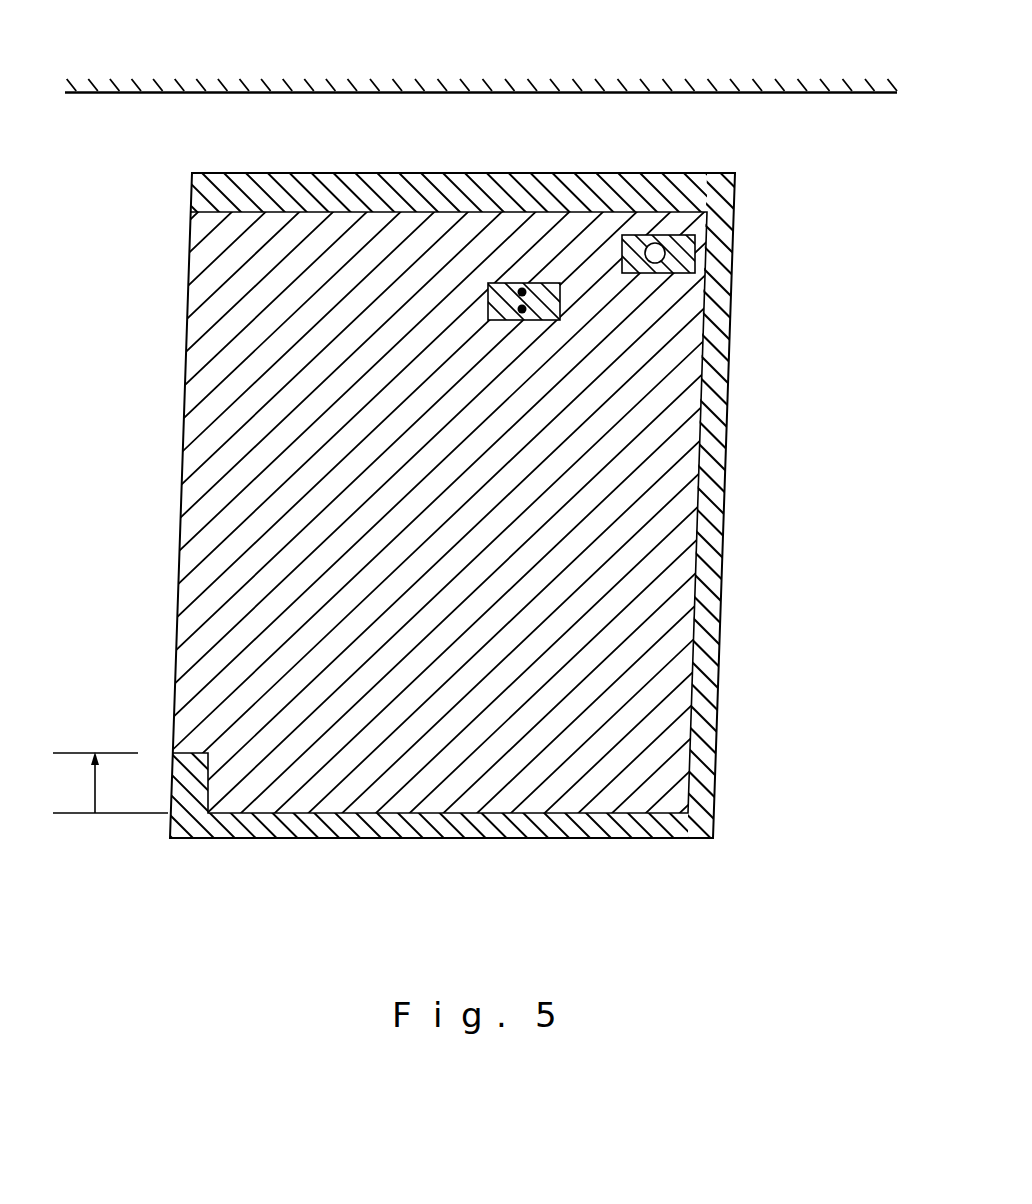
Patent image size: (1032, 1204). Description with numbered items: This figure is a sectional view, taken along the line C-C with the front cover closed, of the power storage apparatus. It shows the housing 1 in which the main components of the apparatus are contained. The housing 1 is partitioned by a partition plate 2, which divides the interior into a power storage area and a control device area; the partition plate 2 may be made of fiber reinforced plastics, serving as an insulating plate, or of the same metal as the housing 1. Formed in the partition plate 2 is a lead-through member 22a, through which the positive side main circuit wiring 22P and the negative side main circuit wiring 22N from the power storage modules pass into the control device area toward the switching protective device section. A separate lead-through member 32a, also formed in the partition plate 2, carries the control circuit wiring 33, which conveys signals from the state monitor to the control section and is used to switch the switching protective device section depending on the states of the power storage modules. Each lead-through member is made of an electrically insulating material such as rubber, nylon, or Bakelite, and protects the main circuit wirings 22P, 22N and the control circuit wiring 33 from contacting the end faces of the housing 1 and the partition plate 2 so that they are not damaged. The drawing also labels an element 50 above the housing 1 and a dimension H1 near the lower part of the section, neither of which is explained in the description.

The ground / mounting surface 50 is at (626, 84).
The housing 1 is at (497, 174).
The partition plate 2 is at (178, 557).
The lead-through member 32a is at (693, 232).
The control circuit wiring 33 is at (661, 243).
The lead-through member 22a is at (527, 320).
The positive side main circuit wiring 22P is at (522, 292).
The negative side main circuit wiring 22N is at (522, 309).
The height H1 is at (110, 782).